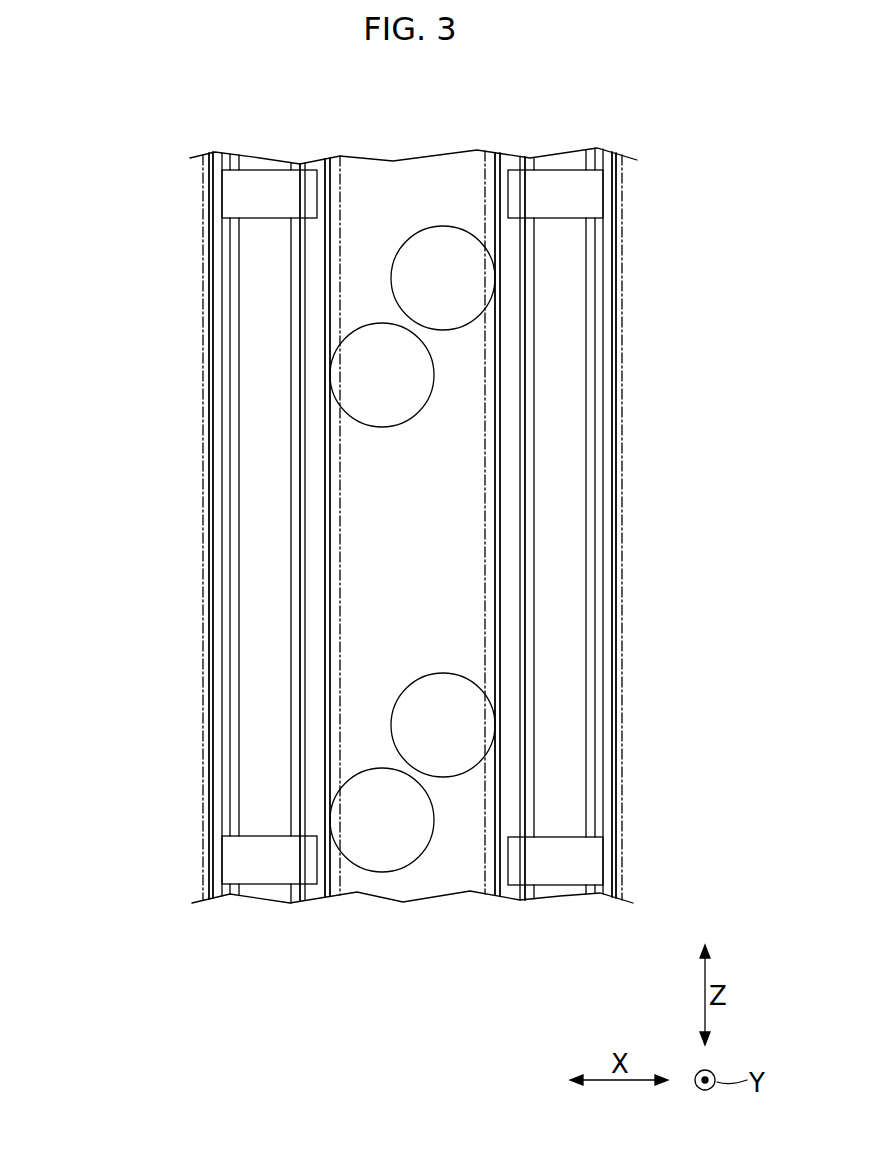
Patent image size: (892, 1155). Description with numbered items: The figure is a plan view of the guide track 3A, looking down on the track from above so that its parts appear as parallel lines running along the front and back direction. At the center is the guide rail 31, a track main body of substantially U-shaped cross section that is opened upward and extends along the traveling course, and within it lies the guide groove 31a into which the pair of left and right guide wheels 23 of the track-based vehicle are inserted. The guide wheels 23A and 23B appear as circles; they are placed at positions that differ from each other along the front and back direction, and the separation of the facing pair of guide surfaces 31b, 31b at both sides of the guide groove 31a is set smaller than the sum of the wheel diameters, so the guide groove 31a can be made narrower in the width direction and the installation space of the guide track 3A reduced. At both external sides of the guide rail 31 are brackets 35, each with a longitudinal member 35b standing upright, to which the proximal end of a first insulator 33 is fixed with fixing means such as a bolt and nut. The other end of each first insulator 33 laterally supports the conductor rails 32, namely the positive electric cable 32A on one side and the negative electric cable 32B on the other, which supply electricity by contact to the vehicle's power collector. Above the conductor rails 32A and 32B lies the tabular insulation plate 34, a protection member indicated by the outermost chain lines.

The guide track 3A is at (412, 535).
The guide wheels 23 is at (411, 549).
The guide wheel 23A is at (480, 240).
The guide wheel 23B is at (354, 419).
The guide rail 31 is at (456, 568).
The guide groove 31a is at (445, 874).
The guide surfaces 31b is at (332, 874).
The conductor rails 32 is at (412, 524).
The positive electric cable 32A is at (210, 627).
The negative electric cable 32B is at (615, 720).
The first insulator 33 is at (262, 170).
The insulation plate 34 is at (203, 240).
The bracket 35 is at (411, 530).
The longitudinal member 35b is at (296, 524).